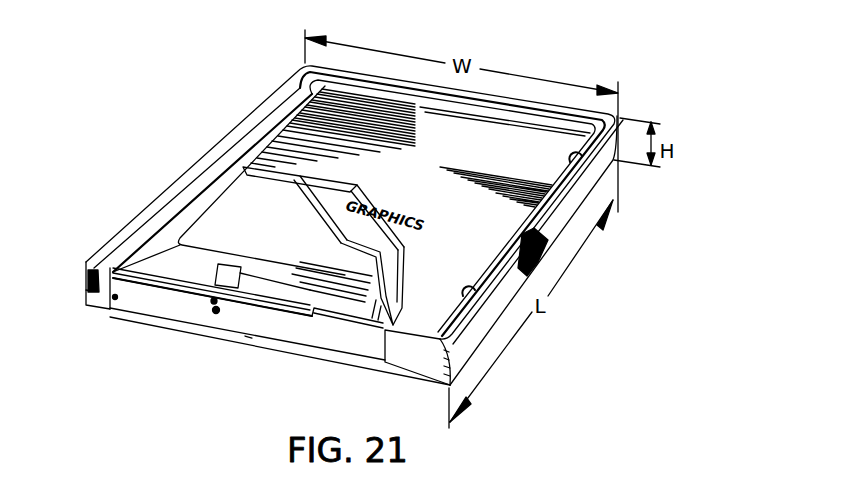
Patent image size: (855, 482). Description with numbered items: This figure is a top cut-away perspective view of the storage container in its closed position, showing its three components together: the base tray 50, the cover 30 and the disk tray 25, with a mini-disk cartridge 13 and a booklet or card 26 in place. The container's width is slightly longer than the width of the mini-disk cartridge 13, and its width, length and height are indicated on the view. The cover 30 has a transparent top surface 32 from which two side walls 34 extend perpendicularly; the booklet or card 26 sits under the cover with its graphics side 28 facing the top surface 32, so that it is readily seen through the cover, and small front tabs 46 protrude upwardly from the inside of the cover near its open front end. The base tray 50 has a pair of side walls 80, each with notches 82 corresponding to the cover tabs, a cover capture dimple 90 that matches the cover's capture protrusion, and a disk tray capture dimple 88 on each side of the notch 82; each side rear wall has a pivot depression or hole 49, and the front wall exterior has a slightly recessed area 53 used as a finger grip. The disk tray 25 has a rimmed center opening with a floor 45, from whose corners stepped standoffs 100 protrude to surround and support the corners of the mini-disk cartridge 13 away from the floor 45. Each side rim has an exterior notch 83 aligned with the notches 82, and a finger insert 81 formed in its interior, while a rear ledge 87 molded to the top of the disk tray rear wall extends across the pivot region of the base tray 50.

The mini-disk cartridge 13 is at (305, 199).
The disk tray 25 is at (201, 167).
The booklet or card 26 is at (361, 190).
The graphics side 28 is at (359, 236).
The cover 30 is at (291, 96).
The top surface 32 is at (464, 166).
The side wall 34 is at (408, 362).
The floor 45 is at (300, 290).
The front tabs 46 is at (578, 158).
The pivot depression or hole 49 is at (86, 292).
The base tray 50 is at (177, 335).
The recessed area 53 is at (530, 252).
The side wall 80 is at (146, 300).
The finger insert 81 is at (256, 290).
The notch 82 is at (290, 345).
The notch 83 is at (250, 338).
The rear ledge 87 is at (260, 120).
The disk tray capture dimple 88 is at (104, 310).
The cover capture dimple 90 is at (208, 333).
The stepped standoff 100 is at (183, 243).